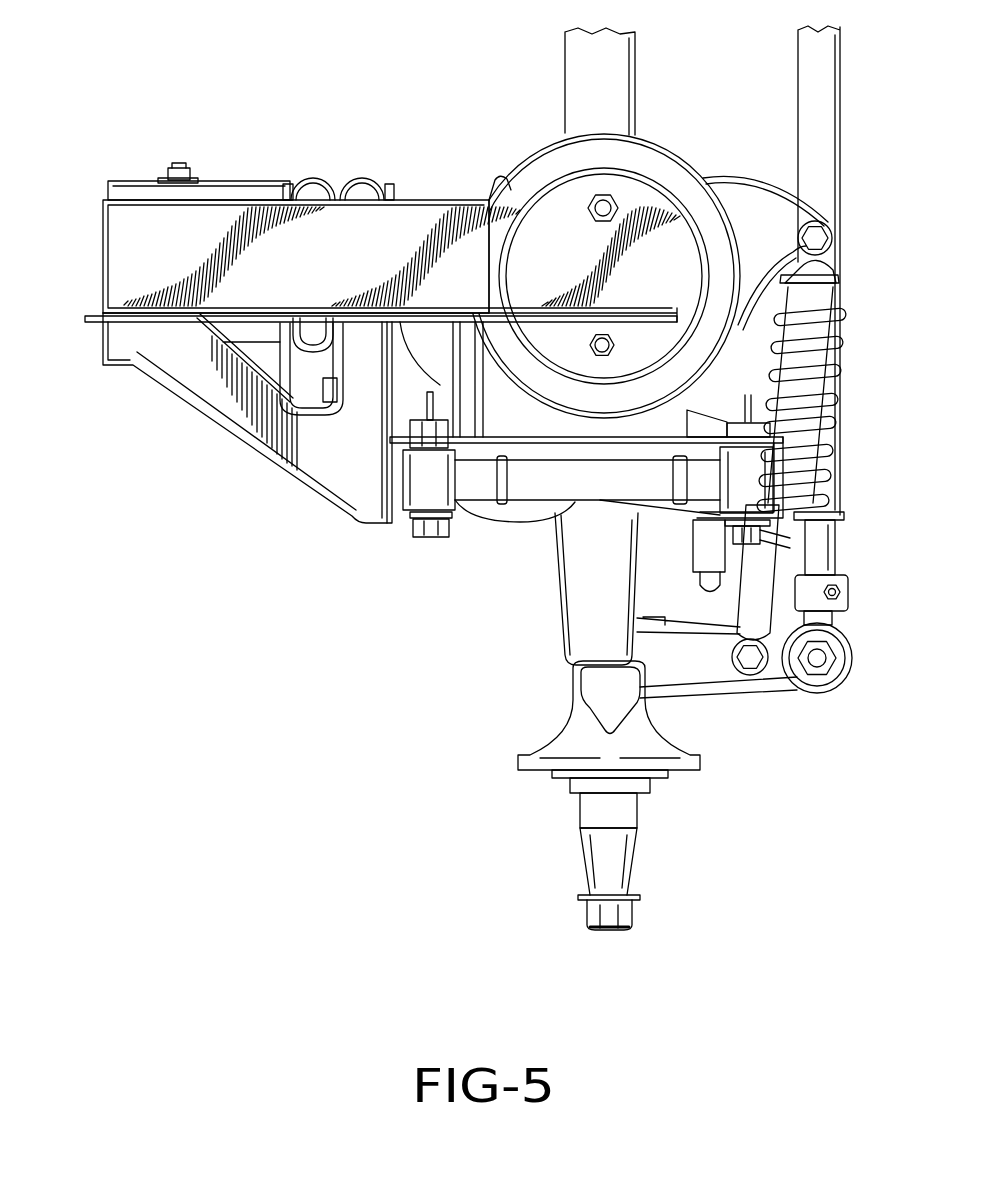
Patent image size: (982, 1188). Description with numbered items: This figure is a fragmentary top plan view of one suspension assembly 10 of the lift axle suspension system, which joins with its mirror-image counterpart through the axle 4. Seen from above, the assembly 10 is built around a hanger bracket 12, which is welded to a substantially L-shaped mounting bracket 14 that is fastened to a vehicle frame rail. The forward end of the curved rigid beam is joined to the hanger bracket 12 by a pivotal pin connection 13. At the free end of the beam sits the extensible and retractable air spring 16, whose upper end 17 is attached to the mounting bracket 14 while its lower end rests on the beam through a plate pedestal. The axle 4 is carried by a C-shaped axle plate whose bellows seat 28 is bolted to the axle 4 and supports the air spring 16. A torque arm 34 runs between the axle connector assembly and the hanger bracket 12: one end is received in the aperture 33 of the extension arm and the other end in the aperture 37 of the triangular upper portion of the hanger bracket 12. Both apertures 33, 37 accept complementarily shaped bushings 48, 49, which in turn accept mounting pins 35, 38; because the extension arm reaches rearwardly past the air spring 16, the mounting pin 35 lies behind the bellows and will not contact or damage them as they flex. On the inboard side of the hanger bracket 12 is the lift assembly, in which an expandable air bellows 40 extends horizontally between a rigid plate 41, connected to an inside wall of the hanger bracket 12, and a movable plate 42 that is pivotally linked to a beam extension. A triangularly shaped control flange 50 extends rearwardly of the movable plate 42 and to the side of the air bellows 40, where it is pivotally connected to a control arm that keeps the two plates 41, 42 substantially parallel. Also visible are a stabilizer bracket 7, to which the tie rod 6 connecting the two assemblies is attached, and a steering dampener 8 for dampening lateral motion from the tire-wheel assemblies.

The axle 4 is at (620, 58).
The tie rod 6 is at (808, 92).
The stabilizer bracket 7 is at (720, 678).
The steering dampener 8 is at (810, 358).
The suspension assembly 10 is at (692, 120).
The hanger bracket 12 is at (178, 375).
The pivotal pin connection 13 is at (178, 168).
The mounting bracket 14 is at (135, 257).
The air spring 16 is at (520, 178).
The upper end 17 is at (562, 183).
The bellows seat 28 is at (760, 195).
The aperture 33 is at (760, 518).
The torque arm 34 is at (590, 478).
The mounting pin 35 is at (752, 548).
The aperture 37 is at (447, 494).
The mounting pin 38 is at (431, 537).
The air bellows 40 is at (318, 193).
The rigid plate 41 is at (390, 197).
The movable plate 42 is at (290, 195).
The bushing 48 is at (770, 445).
The bushing 49 is at (415, 515).
The control flange 50 is at (280, 367).